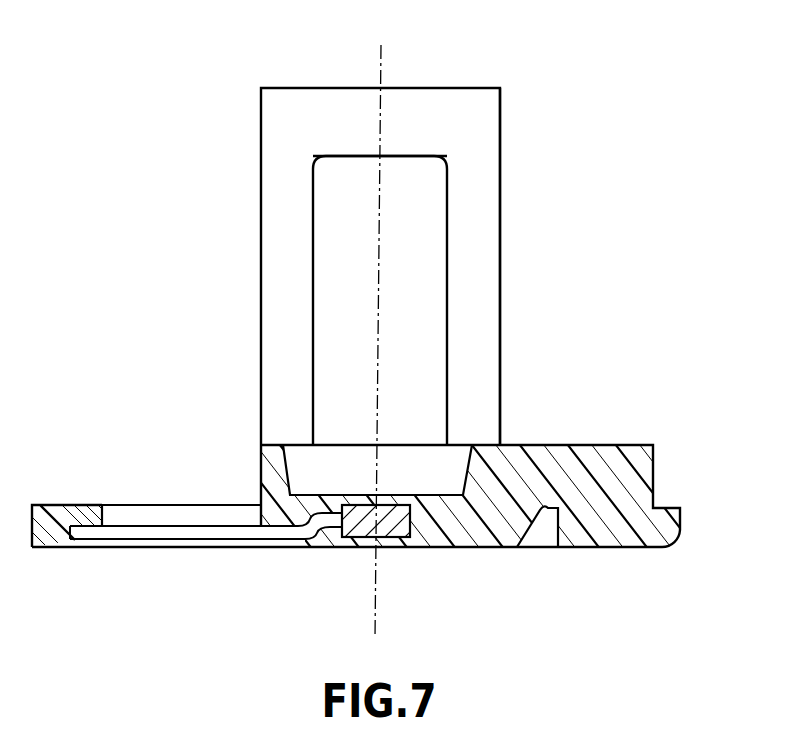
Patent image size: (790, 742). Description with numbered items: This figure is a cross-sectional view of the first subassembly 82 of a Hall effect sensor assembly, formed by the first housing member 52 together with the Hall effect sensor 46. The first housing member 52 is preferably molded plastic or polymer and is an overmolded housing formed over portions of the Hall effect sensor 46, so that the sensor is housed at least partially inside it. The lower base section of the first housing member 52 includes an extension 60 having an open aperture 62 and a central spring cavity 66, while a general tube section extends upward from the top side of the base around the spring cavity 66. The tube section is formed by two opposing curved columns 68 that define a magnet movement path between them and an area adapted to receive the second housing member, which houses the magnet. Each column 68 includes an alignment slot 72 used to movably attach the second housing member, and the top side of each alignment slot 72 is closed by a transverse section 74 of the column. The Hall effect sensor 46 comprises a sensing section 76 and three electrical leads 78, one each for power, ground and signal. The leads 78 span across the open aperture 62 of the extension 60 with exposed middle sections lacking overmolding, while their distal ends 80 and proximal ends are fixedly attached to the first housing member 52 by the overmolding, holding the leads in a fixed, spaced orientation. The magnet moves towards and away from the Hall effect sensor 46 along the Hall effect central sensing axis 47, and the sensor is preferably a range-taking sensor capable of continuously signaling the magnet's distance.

The Hall effect sensor 46 is at (412, 517).
The Hall effect central sensing axis 47 is at (375, 613).
The first housing member 52 is at (502, 243).
The extension 60 is at (48, 512).
The open aperture 62 is at (165, 517).
The central spring cavity 66 is at (452, 463).
The curved columns 68 is at (502, 147).
The alignment slot 72 is at (337, 230).
The transverse section 74 is at (428, 118).
The sensing section 76 is at (402, 538).
The electrical leads 78 is at (167, 535).
The distal ends 80 is at (80, 547).
The first subassembly 82 is at (640, 194).